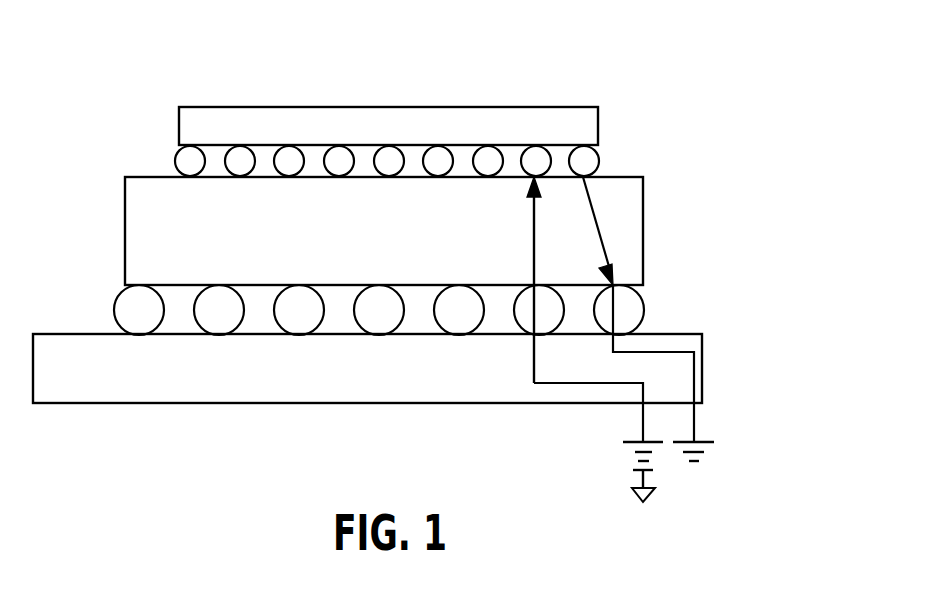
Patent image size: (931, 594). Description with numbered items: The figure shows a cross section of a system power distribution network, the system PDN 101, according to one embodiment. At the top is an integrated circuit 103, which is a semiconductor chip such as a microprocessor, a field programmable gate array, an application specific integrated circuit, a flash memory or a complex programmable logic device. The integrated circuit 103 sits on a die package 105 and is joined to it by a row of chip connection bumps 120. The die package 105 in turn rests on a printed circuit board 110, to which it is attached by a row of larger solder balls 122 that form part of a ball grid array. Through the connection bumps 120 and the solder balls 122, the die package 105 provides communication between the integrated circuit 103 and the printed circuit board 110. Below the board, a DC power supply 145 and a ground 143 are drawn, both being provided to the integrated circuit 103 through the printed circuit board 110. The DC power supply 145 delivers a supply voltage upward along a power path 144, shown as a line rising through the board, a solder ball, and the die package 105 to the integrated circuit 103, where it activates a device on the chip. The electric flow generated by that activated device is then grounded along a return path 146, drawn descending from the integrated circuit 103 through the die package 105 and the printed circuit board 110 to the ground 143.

The system PDN 101 is at (730, 80).
The integrated circuit 103 is at (592, 120).
The connection bumps 120 is at (599, 160).
The die package 105 is at (643, 193).
The power path 144 is at (532, 228).
The return path 146 is at (643, 232).
The solder balls 122 is at (645, 310).
The printed circuit board 110 is at (703, 348).
The DC power supply 145 is at (632, 466).
The ground 143 is at (718, 445).